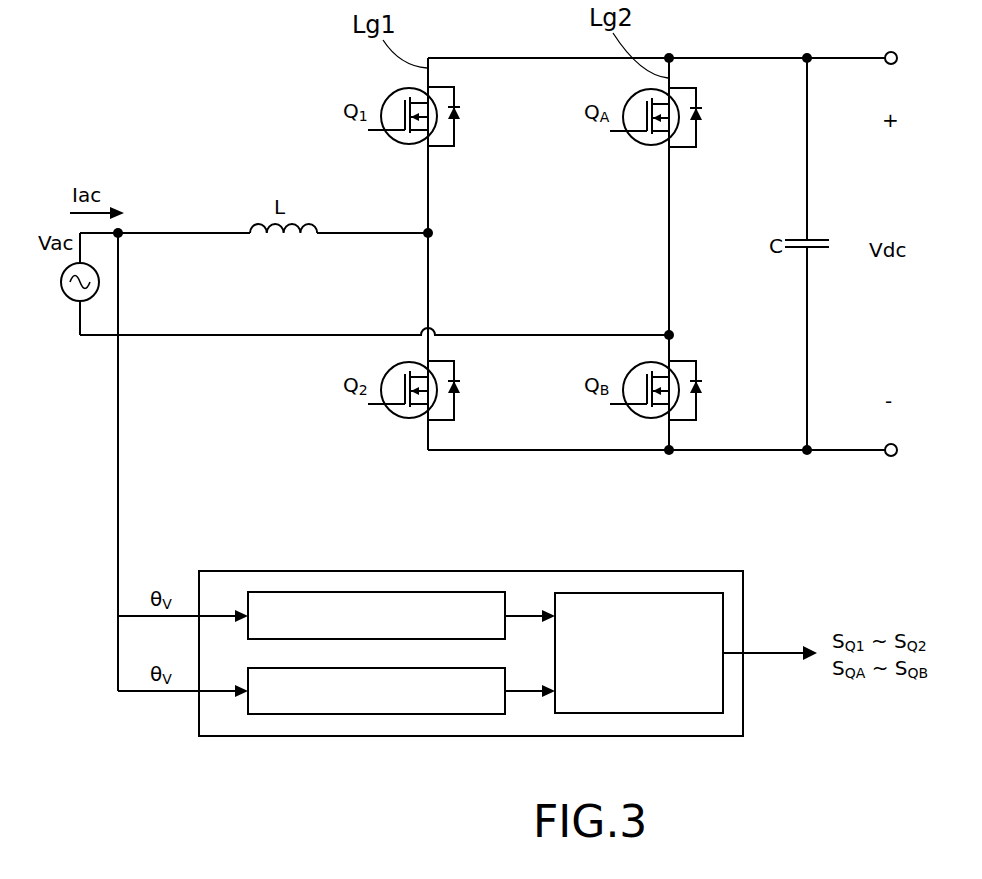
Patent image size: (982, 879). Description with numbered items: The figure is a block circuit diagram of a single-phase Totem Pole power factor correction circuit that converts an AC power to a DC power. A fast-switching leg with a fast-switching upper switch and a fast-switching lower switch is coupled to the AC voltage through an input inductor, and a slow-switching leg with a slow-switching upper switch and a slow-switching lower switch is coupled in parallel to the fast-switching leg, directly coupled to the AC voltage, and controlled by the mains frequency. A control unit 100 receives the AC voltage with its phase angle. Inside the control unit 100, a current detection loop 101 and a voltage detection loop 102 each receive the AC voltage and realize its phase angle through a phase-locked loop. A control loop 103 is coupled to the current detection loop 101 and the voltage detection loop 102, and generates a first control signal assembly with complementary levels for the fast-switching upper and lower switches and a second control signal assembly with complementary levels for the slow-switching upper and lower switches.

The control unit 100 is at (528, 582).
The current detection loop 101 is at (423, 596).
The voltage detection loop 102 is at (423, 707).
The control loop 103 is at (600, 607).